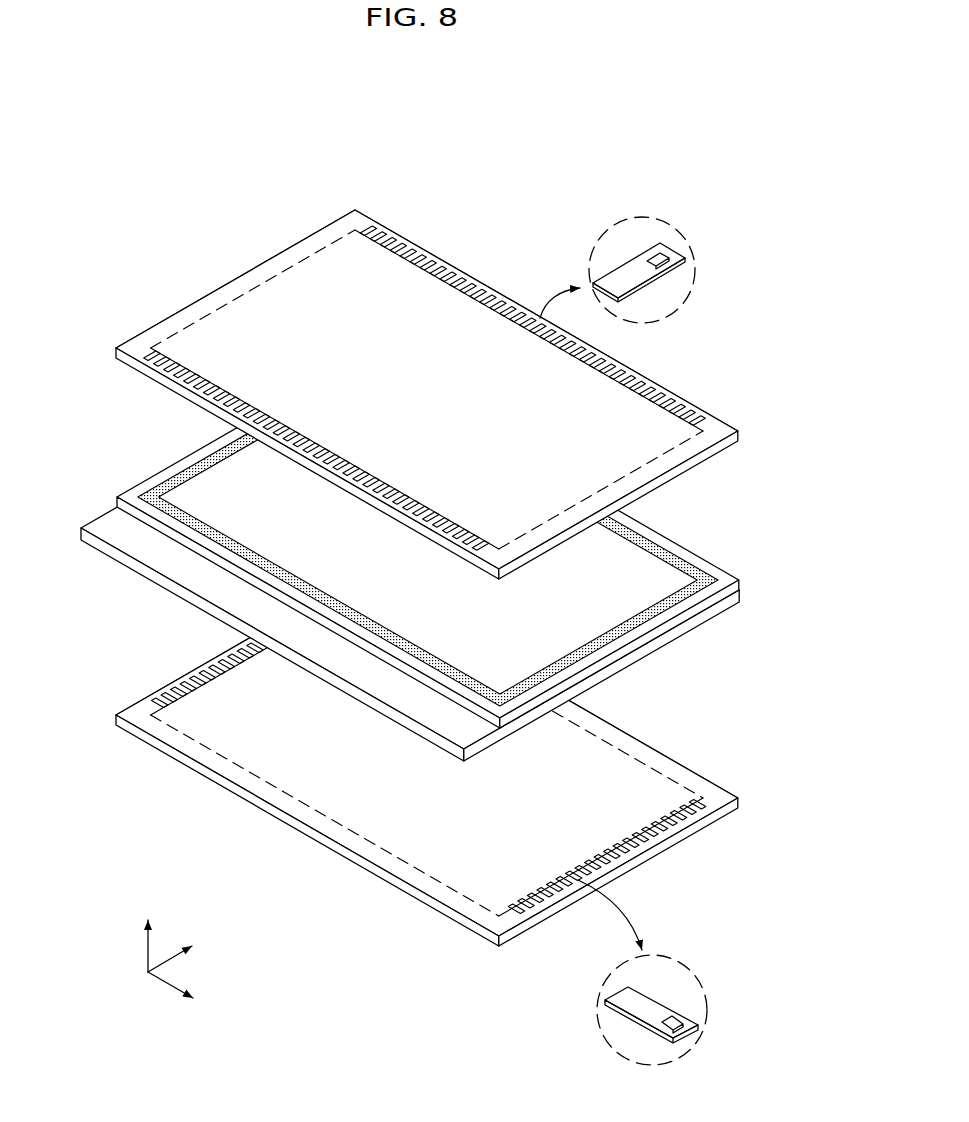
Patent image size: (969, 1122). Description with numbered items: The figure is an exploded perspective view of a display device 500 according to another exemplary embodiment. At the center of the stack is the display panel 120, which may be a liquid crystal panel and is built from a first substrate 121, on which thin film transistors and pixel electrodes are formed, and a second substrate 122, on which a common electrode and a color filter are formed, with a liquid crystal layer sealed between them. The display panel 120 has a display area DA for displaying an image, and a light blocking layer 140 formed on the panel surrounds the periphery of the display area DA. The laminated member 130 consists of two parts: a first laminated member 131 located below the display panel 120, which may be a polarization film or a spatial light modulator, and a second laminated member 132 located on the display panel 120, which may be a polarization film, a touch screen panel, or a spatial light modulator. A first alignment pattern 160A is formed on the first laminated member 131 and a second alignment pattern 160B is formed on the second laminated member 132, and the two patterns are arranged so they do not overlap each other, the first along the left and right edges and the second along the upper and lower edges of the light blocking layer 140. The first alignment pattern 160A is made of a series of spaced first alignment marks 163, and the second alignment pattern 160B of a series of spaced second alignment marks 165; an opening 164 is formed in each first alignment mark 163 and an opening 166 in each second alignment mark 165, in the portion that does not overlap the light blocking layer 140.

The display device 500 is at (430, 190).
The display panel 120 is at (654, 524).
The first substrate 121 is at (118, 557).
The second substrate 122 is at (700, 607).
The light blocking layer 140 is at (203, 464).
The display area DA is at (414, 579).
The laminated member 130 is at (340, 915).
The first laminated member 131 is at (669, 853).
The second laminated member 132 is at (688, 393).
The first alignment pattern 160A is at (176, 684).
The second alignment pattern 160B is at (499, 290).
The first alignment mark 163 is at (625, 997).
The opening 164 is at (677, 1020).
The second alignment mark 165 is at (633, 268).
The opening 166 is at (663, 252).